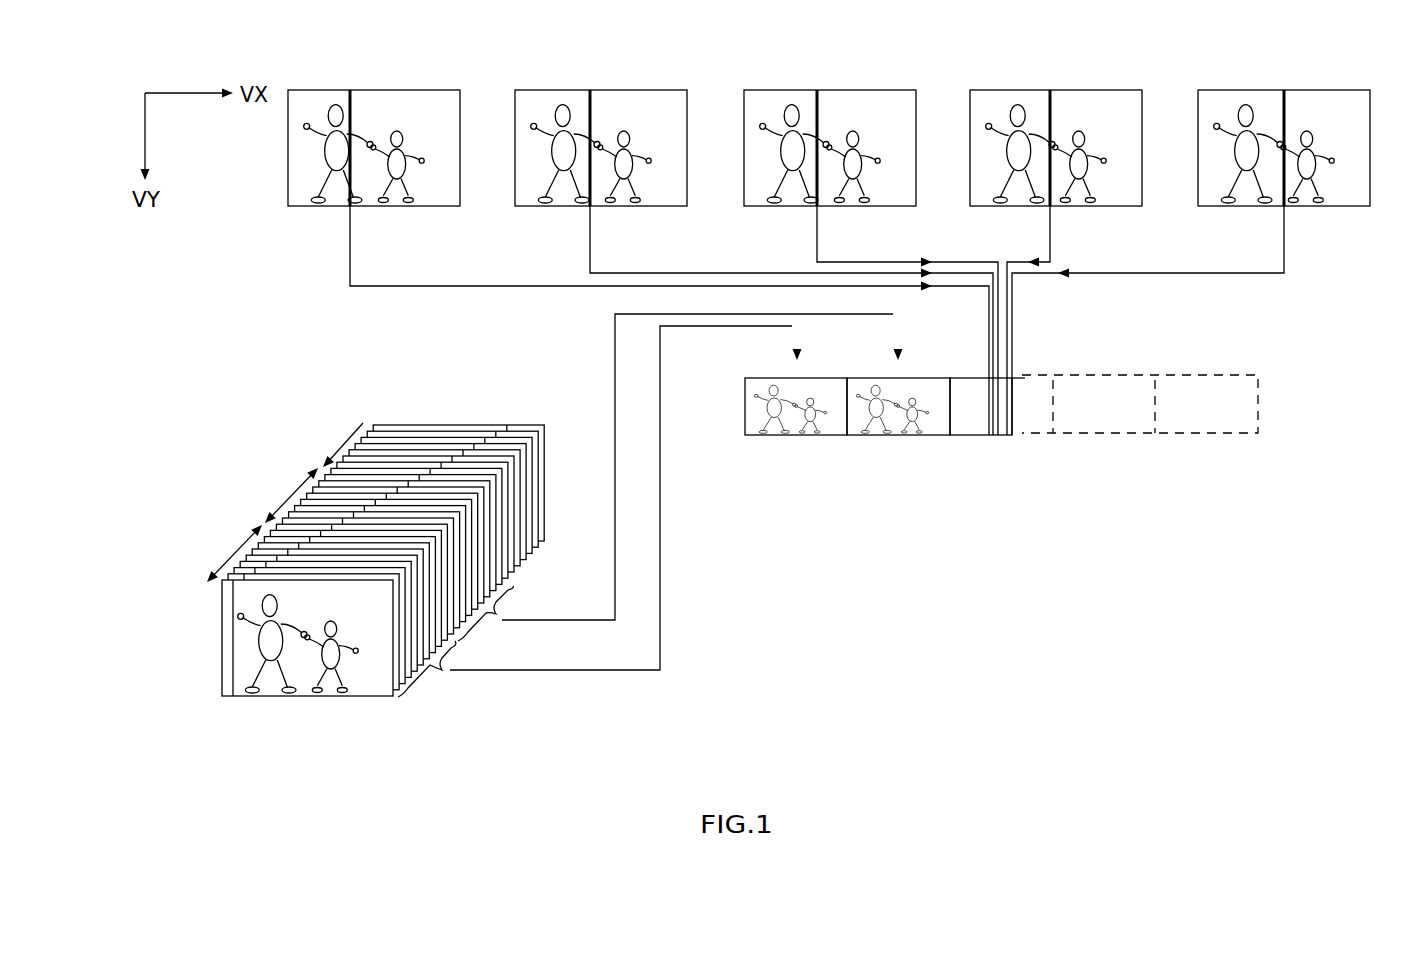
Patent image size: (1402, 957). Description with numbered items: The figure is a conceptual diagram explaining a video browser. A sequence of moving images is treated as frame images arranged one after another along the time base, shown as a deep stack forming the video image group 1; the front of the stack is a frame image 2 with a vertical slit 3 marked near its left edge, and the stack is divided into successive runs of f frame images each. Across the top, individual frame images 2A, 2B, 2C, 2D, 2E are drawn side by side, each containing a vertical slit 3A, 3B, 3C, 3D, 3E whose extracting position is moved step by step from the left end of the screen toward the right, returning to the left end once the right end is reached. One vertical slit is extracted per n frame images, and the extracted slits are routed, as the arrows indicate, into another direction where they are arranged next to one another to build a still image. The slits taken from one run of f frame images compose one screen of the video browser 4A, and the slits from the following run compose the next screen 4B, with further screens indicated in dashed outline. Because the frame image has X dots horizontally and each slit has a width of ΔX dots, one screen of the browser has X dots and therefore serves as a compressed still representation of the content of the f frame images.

The video image group 1 is at (230, 403).
The frame image 2 is at (380, 678).
The vertical slit 3 is at (233, 697).
The frame image 2A is at (388, 90).
The frame image 2B is at (628, 90).
The frame image 2C is at (855, 90).
The frame image 2D is at (1088, 90).
The frame image 2E is at (1322, 90).
The vertical slit 3A is at (351, 90).
The vertical slit 3B is at (591, 90).
The vertical slit 3C is at (818, 90).
The vertical slit 3D is at (1051, 90).
The vertical slit 3E is at (1285, 90).
The video browser 4A is at (745, 378).
The video browser 4B is at (847, 378).